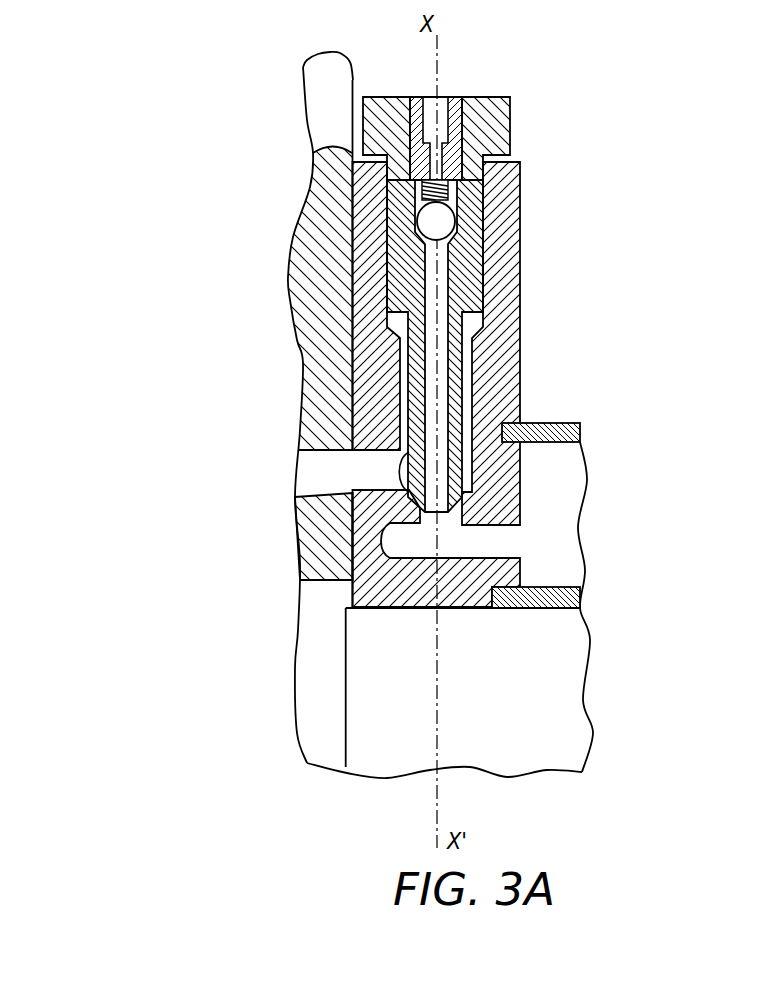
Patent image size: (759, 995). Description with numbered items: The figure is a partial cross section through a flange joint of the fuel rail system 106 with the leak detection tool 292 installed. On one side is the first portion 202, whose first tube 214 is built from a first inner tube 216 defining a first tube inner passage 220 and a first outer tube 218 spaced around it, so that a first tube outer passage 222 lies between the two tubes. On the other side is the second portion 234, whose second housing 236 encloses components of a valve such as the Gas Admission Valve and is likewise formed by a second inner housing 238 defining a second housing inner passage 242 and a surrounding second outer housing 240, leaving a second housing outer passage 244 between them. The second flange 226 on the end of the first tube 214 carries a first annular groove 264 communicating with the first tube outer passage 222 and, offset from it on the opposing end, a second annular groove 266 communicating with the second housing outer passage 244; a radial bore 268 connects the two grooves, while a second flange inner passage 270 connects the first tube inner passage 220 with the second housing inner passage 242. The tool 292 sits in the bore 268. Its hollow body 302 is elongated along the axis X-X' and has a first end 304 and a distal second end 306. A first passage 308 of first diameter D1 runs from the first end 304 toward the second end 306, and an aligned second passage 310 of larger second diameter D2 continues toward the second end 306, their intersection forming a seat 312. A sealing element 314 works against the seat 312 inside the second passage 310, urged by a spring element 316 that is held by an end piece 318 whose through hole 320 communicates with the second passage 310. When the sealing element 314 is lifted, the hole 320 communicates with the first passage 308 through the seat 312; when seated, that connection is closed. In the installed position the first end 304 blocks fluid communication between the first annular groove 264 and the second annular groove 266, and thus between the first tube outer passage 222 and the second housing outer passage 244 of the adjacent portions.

The fuel rail system 106 is at (655, 155).
The first portion 202 is at (572, 380).
The first tube 214 is at (560, 421).
The first inner tube 216 is at (572, 598).
The first outer tube 218 is at (580, 435).
The first tube inner passage 220 is at (552, 693).
The first tube outer passage 222 is at (553, 505).
The second flange 226 is at (521, 349).
The second portion 234 is at (244, 86).
The second housing 236 is at (327, 48).
The second inner housing 238 is at (308, 540).
The second outer housing 240 is at (316, 376).
The second housing inner passage 242 is at (320, 695).
The second housing outer passage 244 is at (338, 455).
The first annular groove 264 is at (513, 543).
The second annular groove 266 is at (390, 470).
The bore 268 is at (468, 327).
The second flange inner passage 270 is at (419, 712).
The leak detection tool 292 is at (489, 96).
The body 302 is at (511, 120).
The first end 304 is at (427, 517).
The second end 306 is at (513, 142).
The first passage 308 is at (440, 410).
The second passage 310 is at (454, 200).
The seat 312 is at (454, 252).
The sealing element 314 is at (418, 222).
The spring element 316 is at (416, 186).
The end piece 318 is at (418, 133).
The through hole 320 is at (449, 96).
The first diameter D1 is at (425, 512).
The second diameter D2 is at (458, 182).